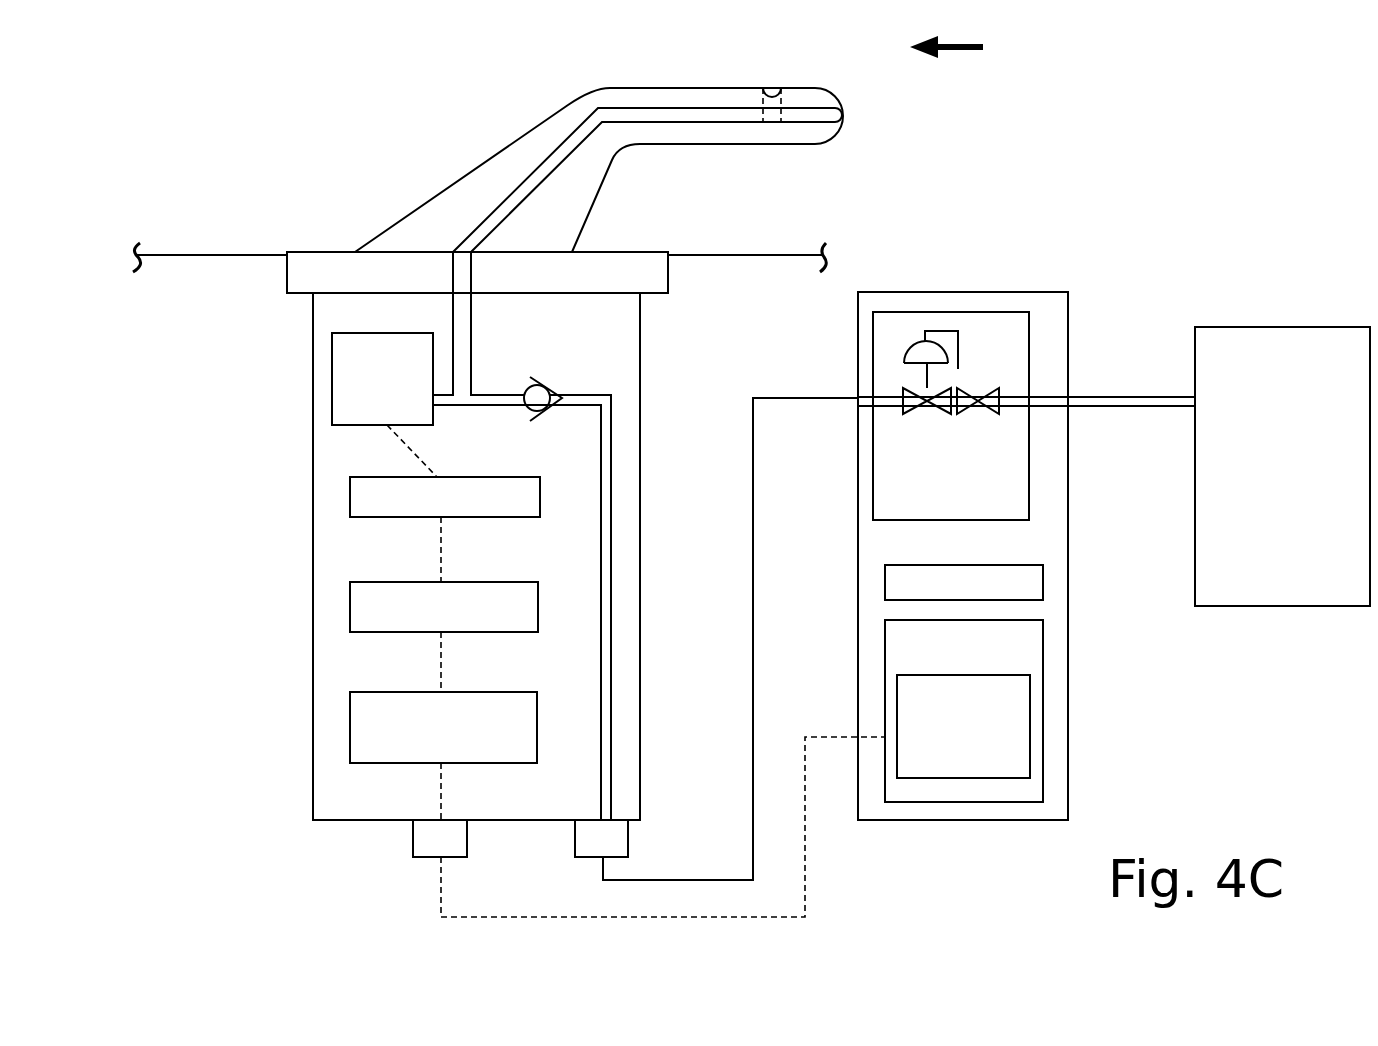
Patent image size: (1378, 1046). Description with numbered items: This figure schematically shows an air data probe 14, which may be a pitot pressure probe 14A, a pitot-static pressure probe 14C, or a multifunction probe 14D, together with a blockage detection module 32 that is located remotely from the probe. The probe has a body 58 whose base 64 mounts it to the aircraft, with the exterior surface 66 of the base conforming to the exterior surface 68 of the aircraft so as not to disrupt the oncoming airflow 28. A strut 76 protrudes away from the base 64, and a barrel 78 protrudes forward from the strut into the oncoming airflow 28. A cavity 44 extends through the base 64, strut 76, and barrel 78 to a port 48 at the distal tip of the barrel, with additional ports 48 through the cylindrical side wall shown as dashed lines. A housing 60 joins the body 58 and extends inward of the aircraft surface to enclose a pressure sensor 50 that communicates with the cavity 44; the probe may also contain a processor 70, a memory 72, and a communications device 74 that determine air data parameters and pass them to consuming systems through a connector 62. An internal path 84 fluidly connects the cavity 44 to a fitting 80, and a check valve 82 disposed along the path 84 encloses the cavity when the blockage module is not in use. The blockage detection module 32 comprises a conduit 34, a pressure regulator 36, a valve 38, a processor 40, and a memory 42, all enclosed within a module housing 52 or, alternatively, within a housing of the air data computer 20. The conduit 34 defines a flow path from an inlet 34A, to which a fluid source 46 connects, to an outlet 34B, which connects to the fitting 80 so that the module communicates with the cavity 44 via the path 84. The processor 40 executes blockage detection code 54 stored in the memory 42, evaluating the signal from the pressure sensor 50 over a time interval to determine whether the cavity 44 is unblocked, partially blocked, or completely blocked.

The air data probe 14 is at (462, 170).
The pitot pressure probe 14A is at (462, 170).
The pitot-static pressure probe 14C is at (462, 170).
The multifunction probe 14D is at (447, 157).
The air data computer 20 is at (1068, 676).
The oncoming airflow 28 is at (946, 32).
The blockage detection module 32 is at (1038, 241).
The conduit 34 is at (452, 322).
The inlet 34A is at (1068, 398).
The outlet 34B is at (858, 397).
The pressure regulator 36 is at (958, 369).
The valve 38 is at (971, 392).
The processor 40 is at (1002, 594).
The memory 42 is at (1002, 656).
The cavity 44 is at (567, 145).
The fluid source 46 is at (1271, 482).
The port 48 is at (772, 86).
The pressure sensor 50 is at (370, 417).
The module housing 52 is at (1018, 556).
The blockage detection code 54 is at (951, 768).
The body 58 is at (704, 68).
The housing 60 is at (313, 500).
The connector 62 is at (413, 840).
The base 64 is at (287, 273).
The exterior surface of base 66 is at (325, 240).
The exterior surface of aircraft 68 is at (795, 243).
The processor 70 is at (486, 507).
The memory 72 is at (486, 617).
The communications device 74 is at (491, 752).
The strut 76 is at (605, 185).
The barrel 78 is at (717, 145).
The fitting 80 is at (575, 840).
The check valve 82 is at (540, 378).
The internal path 84 is at (613, 452).